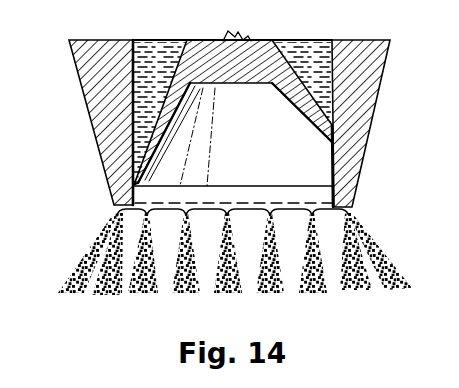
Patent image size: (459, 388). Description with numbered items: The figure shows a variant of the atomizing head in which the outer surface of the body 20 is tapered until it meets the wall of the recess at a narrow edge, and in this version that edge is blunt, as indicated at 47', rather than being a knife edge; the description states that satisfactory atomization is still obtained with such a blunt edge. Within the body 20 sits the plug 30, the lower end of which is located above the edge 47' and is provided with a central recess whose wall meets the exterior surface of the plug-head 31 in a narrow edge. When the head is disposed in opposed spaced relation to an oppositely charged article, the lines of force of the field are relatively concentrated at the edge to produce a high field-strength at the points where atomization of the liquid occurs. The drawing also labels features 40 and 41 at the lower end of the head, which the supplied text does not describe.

The body 20 is at (85, 102).
The plug 30 is at (178, 65).
The plug-head 31 is at (150, 137).
The nozzle orifice 40 is at (226, 211).
The spray 41 is at (170, 283).
The blunt edge 47' is at (180, 211).